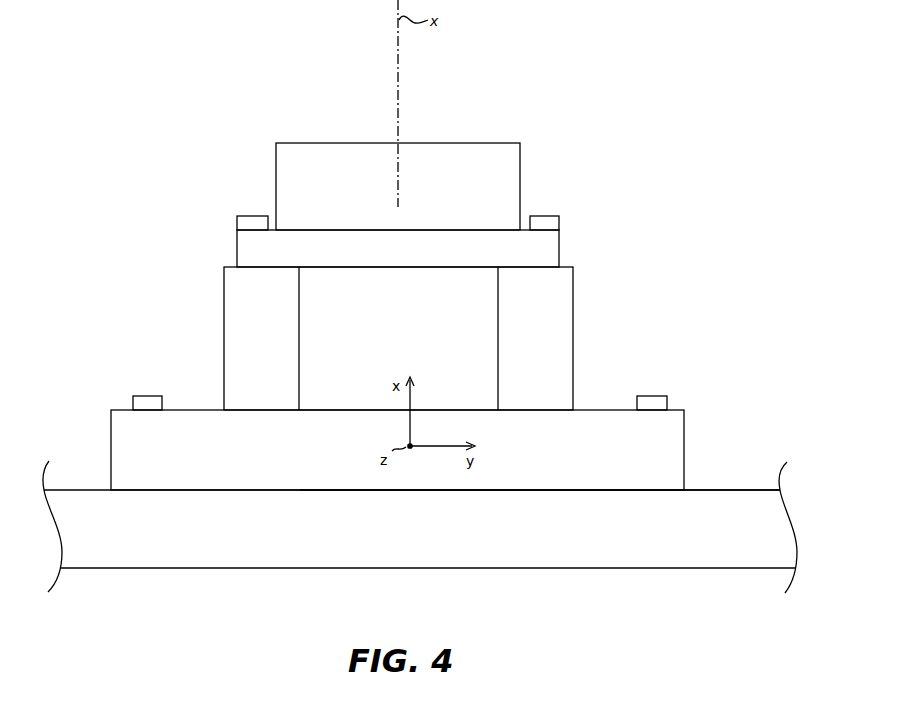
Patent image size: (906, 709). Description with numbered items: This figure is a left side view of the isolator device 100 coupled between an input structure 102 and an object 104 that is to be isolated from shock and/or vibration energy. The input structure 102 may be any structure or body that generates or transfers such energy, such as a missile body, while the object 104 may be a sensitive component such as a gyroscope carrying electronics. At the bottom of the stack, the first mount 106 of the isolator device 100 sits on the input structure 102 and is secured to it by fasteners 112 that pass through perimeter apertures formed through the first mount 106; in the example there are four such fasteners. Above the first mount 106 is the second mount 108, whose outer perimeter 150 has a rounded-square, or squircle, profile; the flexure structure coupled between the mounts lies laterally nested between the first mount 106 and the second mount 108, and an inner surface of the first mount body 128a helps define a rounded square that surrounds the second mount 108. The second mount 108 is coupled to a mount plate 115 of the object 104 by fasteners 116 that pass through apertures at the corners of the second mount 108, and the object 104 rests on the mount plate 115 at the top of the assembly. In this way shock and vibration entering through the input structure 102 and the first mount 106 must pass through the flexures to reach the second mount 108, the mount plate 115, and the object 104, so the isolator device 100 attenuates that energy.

The isolator device 100 is at (200, 300).
The input structure 102 is at (679, 534).
The object 104 is at (505, 163).
The first mount 106 is at (694, 447).
The second mount 108 is at (558, 337).
The fasteners 112 is at (147, 402).
The mount plate 115 is at (543, 245).
The fasteners 116 is at (250, 225).
The first mount body 128a is at (585, 469).
The outer perimeter 150 is at (543, 299).